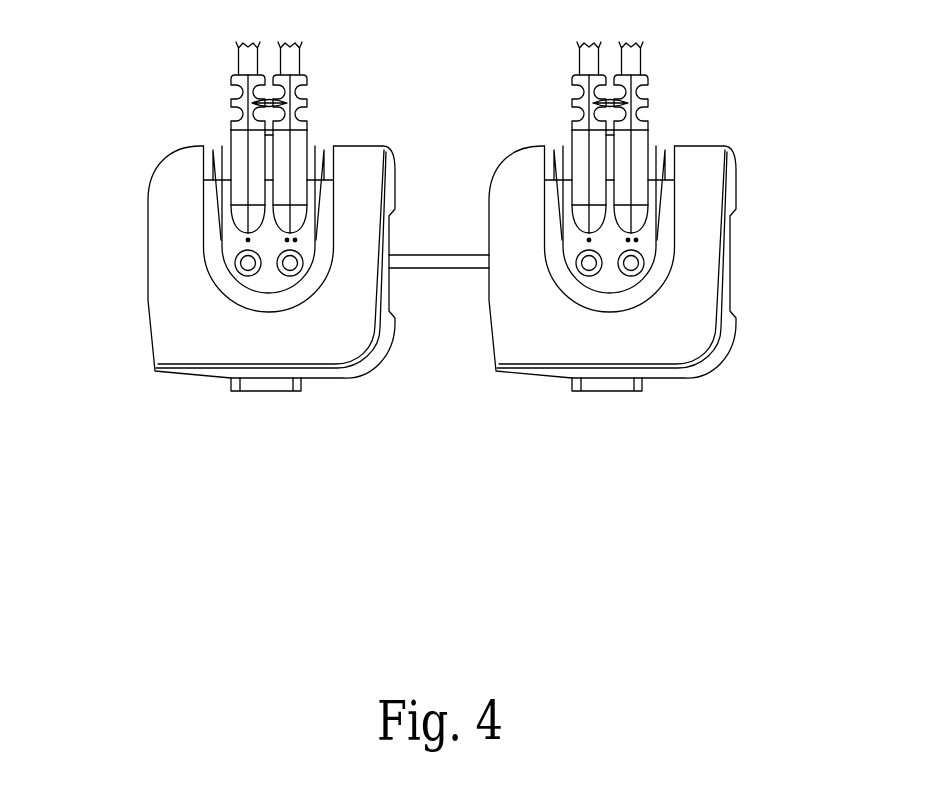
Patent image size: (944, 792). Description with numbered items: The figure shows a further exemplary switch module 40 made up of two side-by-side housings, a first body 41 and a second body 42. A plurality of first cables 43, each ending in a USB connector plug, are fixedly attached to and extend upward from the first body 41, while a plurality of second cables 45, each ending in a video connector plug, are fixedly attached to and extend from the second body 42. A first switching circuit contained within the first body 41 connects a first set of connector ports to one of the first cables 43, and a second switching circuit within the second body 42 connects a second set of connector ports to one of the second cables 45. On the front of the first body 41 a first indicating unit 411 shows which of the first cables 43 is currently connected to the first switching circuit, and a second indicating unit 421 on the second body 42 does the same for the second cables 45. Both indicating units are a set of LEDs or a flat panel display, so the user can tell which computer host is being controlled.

The switch module 40 is at (439, 200).
The first body 41 is at (231, 216).
The second body 42 is at (663, 215).
The first cables 43 is at (290, 60).
The second cables 45 is at (632, 53).
The first indicating unit 411 is at (247, 262).
The second indicating unit 421 is at (633, 263).